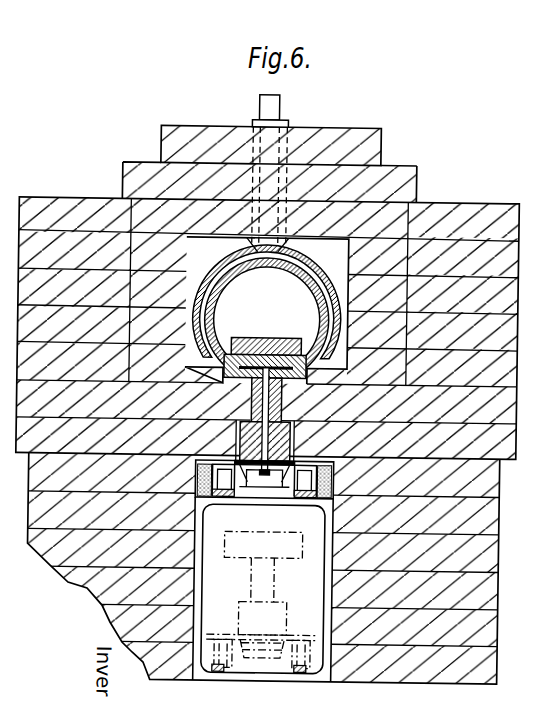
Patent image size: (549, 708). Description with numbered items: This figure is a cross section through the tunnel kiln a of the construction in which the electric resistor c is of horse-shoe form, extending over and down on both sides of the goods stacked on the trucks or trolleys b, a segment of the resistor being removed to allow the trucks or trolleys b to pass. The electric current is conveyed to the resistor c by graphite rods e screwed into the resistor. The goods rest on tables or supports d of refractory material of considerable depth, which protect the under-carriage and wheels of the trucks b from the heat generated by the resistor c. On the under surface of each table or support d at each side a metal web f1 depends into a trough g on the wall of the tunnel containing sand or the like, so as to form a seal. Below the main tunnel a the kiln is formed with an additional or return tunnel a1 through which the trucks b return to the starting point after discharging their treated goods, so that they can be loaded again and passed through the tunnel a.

The tunnel kiln a is at (267, 298).
The return tunnel a1 is at (263, 589).
The trucks or trolleys b is at (276, 474).
The electric resistor c is at (311, 283).
The tables or supports d is at (306, 348).
The graphite rods e is at (266, 109).
The metal web f1 is at (202, 466).
The trough g is at (264, 502).